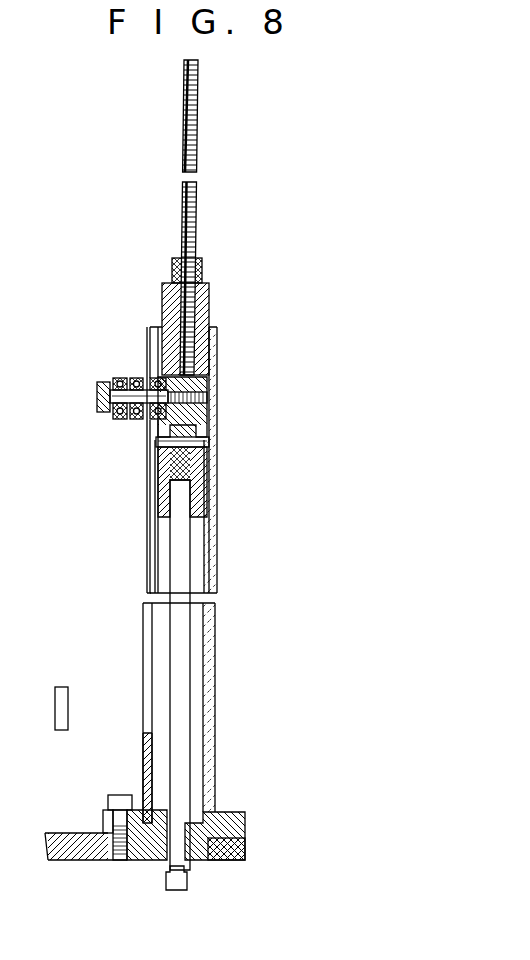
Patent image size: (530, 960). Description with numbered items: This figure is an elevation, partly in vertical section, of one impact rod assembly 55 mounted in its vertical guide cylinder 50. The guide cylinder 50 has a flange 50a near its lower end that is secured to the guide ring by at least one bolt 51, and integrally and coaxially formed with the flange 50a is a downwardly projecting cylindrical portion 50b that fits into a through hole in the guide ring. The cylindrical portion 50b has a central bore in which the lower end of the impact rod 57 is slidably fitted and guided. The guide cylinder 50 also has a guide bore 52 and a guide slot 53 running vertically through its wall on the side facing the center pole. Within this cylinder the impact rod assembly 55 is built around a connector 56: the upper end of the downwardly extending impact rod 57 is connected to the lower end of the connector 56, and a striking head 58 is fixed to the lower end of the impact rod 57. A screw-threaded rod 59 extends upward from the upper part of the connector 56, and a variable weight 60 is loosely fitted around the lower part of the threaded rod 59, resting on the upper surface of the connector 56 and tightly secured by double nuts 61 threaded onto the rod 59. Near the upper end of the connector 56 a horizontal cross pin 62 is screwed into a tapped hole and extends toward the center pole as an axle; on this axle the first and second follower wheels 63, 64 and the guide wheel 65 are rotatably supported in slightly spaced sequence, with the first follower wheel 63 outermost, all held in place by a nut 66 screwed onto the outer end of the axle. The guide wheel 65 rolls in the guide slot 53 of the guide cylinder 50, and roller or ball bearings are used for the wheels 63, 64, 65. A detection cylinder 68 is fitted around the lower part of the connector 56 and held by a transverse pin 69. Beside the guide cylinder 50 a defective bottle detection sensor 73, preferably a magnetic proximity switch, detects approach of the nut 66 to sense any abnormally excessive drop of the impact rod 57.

The guide cylinder 50 is at (215, 636).
The flange 50a is at (232, 812).
The cylindrical portion 50b is at (151, 852).
The bolt 51 is at (118, 800).
The guide bore 52 is at (206, 549).
The guide slot 53 is at (152, 556).
The impact rod assembly 55 is at (216, 308).
The connector 56 is at (210, 413).
The impact rod 57 is at (182, 686).
The striking head 58 is at (187, 883).
The screw-threaded rod 59 is at (199, 118).
The variable weight 60 is at (162, 296).
The double nuts 61 is at (172, 265).
The cross pin 62 is at (119, 379).
The first follower wheel 63 is at (110, 410).
The second follower wheel 64 is at (129, 416).
The guide wheel 65 is at (156, 418).
The nut 66 is at (98, 392).
The detection cylinder 68 is at (205, 505).
The transverse pin 69 is at (210, 446).
The defective bottle detection sensor 73 is at (55, 722).